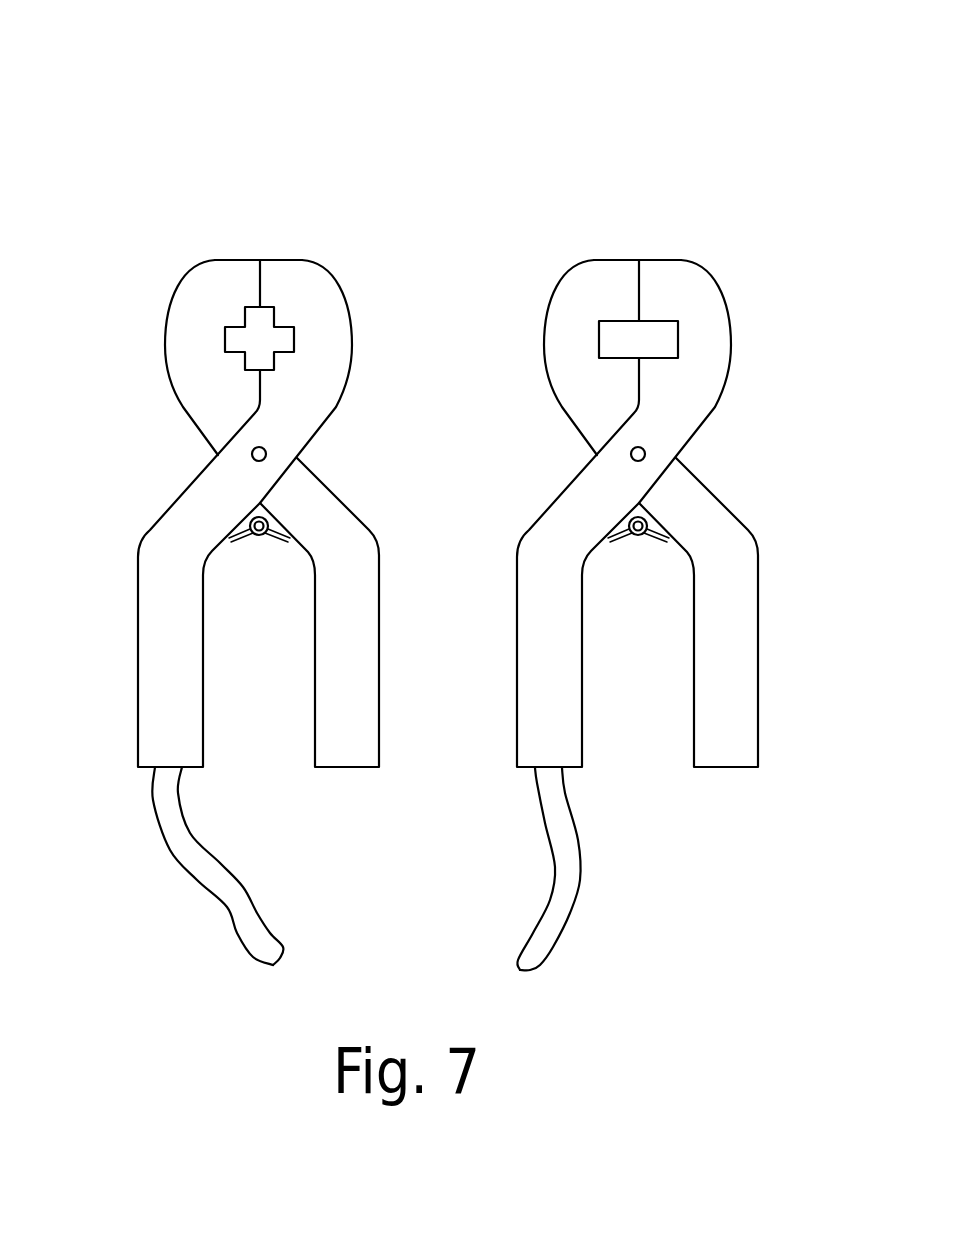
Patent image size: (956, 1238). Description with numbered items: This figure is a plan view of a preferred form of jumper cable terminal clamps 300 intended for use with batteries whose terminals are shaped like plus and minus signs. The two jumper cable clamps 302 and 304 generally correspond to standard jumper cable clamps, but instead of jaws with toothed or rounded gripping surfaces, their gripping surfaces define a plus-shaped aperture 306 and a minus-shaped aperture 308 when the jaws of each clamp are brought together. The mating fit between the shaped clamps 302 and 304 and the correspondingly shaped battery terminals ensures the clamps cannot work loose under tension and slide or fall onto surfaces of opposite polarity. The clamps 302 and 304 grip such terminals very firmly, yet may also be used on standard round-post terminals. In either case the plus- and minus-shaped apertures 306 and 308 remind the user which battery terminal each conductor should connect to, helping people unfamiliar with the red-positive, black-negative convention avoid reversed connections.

The jumper cable terminal clamps 300 is at (652, 66).
The clamp 302 is at (138, 698).
The clamp 304 is at (760, 713).
The plus-shaped aperture 306 is at (244, 313).
The minus-shaped aperture 308 is at (708, 342).